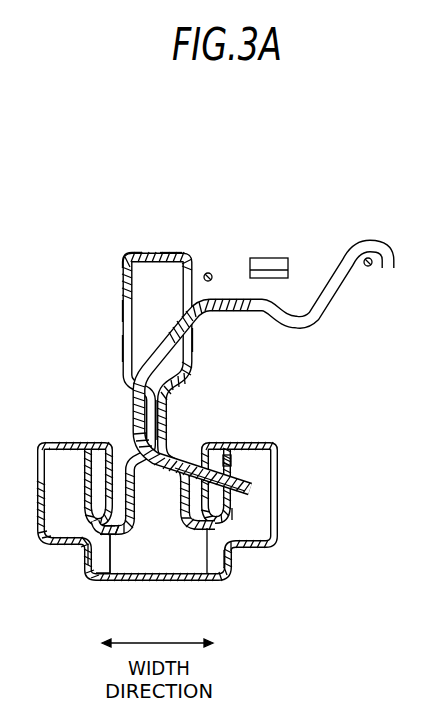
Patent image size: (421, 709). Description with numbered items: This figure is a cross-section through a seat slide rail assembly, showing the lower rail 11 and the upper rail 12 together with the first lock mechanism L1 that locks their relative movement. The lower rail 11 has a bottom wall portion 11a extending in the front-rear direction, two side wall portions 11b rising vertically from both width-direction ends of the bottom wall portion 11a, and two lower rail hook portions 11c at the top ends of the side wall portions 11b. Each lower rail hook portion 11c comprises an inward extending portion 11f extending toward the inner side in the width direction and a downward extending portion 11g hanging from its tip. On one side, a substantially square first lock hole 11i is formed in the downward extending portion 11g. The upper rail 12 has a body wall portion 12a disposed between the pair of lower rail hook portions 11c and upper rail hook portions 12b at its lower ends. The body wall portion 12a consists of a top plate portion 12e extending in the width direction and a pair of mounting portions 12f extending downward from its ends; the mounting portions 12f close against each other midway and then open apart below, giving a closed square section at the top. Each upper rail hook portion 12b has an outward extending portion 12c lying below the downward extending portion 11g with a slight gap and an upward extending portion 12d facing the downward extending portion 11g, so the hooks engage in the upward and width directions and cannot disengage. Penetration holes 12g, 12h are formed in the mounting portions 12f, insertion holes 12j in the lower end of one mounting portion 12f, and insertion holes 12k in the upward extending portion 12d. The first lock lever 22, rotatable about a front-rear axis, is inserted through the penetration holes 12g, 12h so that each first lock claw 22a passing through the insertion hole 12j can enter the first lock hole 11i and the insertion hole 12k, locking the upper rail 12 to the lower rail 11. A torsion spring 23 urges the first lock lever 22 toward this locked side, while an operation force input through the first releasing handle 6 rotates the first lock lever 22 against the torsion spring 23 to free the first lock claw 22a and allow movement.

The first releasing handle 6 is at (277, 258).
The lower rail 11 is at (80, 578).
The bottom wall portion 11a is at (200, 582).
The side wall portion 11b is at (41, 442).
The lower rail hook portion 11c is at (95, 442).
The inward extending portion 11f is at (75, 442).
The downward extending portion 11g is at (120, 527).
The first lock hole 11i is at (198, 445).
The upper rail 12 is at (152, 243).
The body wall portion 12a is at (122, 266).
The upper rail hook portion 12b is at (112, 556).
The outward extending portion 12c is at (99, 581).
The upward extending portion 12d is at (84, 542).
The top plate portion 12e is at (166, 252).
The mounting portion 12f is at (122, 343).
The penetration hole 12g is at (198, 292).
The penetration hole 12h is at (122, 311).
The insertion hole 12j is at (166, 412).
The insertion hole 12k is at (233, 458).
The first lock lever 22 is at (374, 227).
The first lock claw 22a is at (256, 490).
The torsion spring 23 is at (368, 268).
The first lock mechanism L1 is at (326, 355).